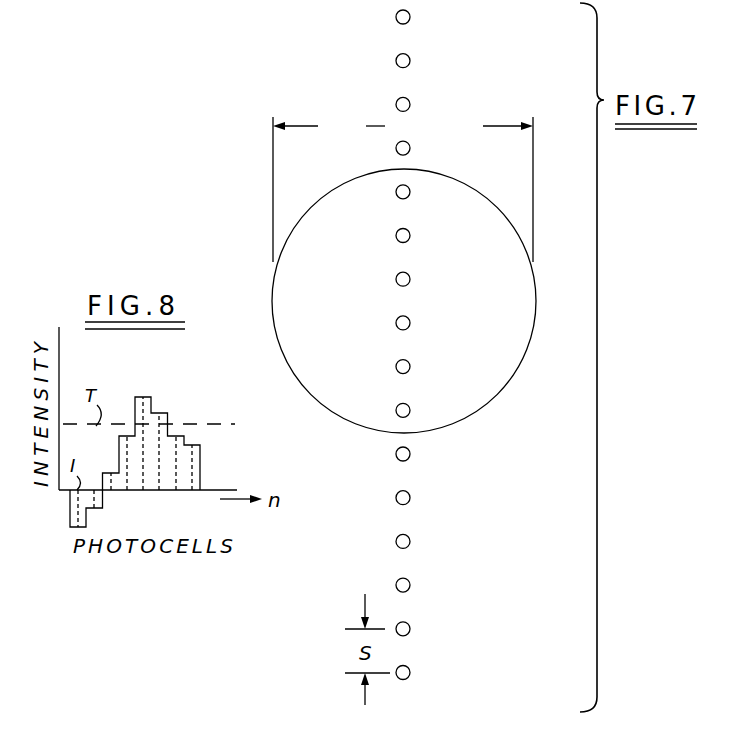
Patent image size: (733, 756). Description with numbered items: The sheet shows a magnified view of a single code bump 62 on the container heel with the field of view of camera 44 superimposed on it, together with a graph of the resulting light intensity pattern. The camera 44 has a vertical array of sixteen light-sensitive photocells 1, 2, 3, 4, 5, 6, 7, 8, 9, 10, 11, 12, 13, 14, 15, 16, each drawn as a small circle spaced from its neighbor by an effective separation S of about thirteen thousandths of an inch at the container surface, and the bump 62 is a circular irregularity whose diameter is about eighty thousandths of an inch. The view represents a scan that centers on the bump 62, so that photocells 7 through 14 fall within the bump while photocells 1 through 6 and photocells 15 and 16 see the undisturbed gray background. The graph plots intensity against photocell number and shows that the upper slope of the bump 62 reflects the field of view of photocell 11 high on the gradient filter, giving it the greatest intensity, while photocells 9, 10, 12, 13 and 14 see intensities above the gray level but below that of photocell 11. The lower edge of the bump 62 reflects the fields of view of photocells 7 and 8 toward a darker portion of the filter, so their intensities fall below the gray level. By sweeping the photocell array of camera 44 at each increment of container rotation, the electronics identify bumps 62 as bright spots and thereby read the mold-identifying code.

In FIG. 7, the camera 44 is at (370, 103).
In FIG. 7, the code bump 62 is at (521, 361).
In FIG. 7, the photocell 1 is at (413, 672).
In FIG. 7, the photocell 2 is at (413, 629).
In FIG. 7, the photocell 3 is at (413, 585).
In FIG. 7, the photocell 4 is at (413, 541).
In FIG. 7, the photocell 5 is at (413, 498).
In FIG. 7, the photocell 6 is at (413, 454).
In FIG. 7, the photocell 7 is at (413, 410).
In FIG. 8, the photocell 7 is at (79, 508).
In FIG. 7, the photocell 8 is at (413, 367).
In FIG. 8, the photocell 8 is at (97, 510).
In FIG. 7, the photocell 9 is at (413, 323).
In FIG. 8, the photocell 9 is at (113, 492).
In FIG. 7, the photocell 10 is at (413, 279).
In FIG. 8, the photocell 10 is at (131, 483).
In FIG. 7, the photocell 11 is at (413, 236).
In FIG. 8, the photocell 11 is at (150, 454).
In FIG. 7, the photocell 12 is at (413, 192).
In FIG. 8, the photocell 12 is at (161, 472).
In FIG. 7, the photocell 13 is at (413, 148).
In FIG. 8, the photocell 13 is at (180, 474).
In FIG. 7, the photocell 14 is at (413, 104).
In FIG. 8, the photocell 14 is at (192, 488).
In FIG. 7, the photocell 15 is at (413, 61).
In FIG. 7, the photocell 16 is at (413, 17).